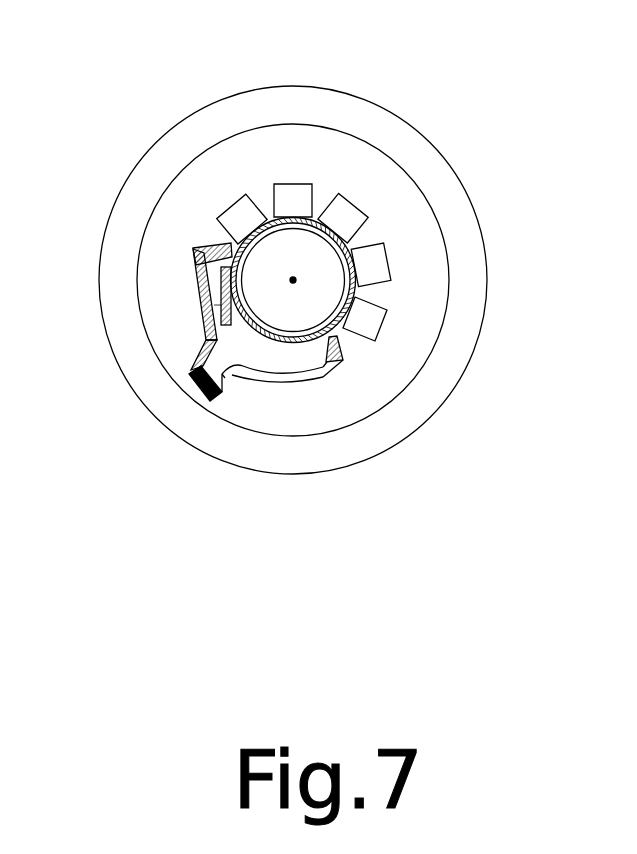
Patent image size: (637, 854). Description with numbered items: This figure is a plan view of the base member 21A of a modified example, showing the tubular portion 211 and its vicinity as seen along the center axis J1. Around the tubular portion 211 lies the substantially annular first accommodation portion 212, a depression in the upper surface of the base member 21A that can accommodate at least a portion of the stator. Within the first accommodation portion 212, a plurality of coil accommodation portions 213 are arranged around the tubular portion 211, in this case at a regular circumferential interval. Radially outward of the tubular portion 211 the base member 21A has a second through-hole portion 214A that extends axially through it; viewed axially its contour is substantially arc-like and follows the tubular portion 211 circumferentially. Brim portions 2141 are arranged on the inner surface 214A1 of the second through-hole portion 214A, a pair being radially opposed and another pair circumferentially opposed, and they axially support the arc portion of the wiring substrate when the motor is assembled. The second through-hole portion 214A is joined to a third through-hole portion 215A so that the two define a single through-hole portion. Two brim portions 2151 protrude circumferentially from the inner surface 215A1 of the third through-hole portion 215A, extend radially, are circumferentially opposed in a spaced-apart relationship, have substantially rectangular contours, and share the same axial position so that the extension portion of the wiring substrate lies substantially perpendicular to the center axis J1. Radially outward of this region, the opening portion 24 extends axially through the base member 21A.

The base member 21A is at (98, 635).
The tubular portion 211 is at (323, 210).
The first accommodation portion 212 is at (432, 273).
The coil accommodation portion 213 is at (247, 193).
The brim portion 2141 is at (213, 243).
The second through-hole portion 214A is at (322, 362).
The inner surface of the second through-hole portion 214A1 is at (215, 340).
The third through-hole portion 215A is at (211, 403).
The inner surface of the third through-hole portion 215A1 is at (193, 376).
The brim portion 2151 is at (215, 362).
The opening portion 24 is at (193, 401).
The center axis J1 is at (293, 280).